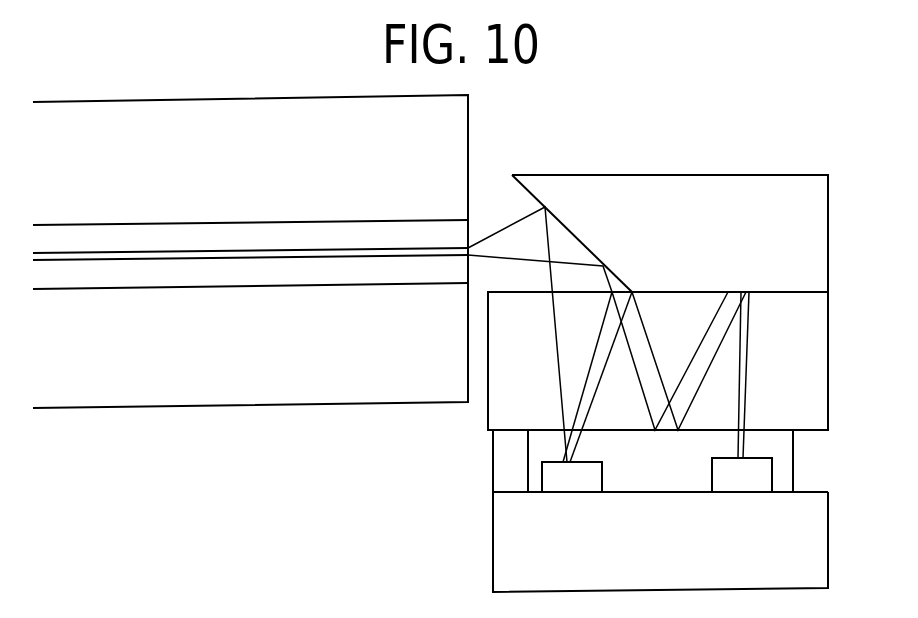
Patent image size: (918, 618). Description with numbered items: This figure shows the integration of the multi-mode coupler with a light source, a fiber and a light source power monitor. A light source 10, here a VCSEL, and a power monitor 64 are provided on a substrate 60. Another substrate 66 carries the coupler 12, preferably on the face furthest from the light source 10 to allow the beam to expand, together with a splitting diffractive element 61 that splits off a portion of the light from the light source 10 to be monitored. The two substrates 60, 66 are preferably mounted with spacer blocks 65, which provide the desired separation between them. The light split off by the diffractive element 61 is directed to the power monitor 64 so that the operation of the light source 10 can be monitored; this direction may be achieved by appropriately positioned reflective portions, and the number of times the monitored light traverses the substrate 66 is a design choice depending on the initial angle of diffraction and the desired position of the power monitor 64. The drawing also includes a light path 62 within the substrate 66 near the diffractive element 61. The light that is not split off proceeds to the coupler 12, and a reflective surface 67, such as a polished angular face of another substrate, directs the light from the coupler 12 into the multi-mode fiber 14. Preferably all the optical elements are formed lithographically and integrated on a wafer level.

The light source 10 is at (602, 478).
The coupler 12 is at (562, 292).
The multi-mode fiber 14 is at (470, 118).
The substrate 60 is at (492, 553).
The splitting diffractive element 61 is at (577, 433).
The reflected light path 62 is at (655, 430).
The power monitor 64 is at (712, 476).
The spacer blocks 65 is at (492, 466).
The substrate 66 is at (828, 330).
The reflective surface 67 is at (543, 210).